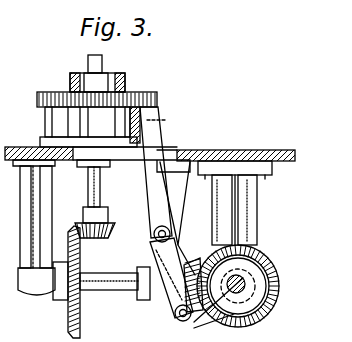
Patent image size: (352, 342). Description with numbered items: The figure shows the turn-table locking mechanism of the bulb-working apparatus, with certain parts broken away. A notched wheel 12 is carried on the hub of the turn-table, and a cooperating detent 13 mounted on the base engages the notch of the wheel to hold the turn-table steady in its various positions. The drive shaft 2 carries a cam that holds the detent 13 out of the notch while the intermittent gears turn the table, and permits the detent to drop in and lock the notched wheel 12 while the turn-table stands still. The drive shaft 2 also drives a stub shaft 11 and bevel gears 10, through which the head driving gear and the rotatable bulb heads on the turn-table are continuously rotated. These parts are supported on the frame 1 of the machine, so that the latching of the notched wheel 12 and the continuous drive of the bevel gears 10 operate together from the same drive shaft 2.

The frame 1 is at (287, 159).
The drive shaft 2 is at (242, 282).
The bevel gears 10 is at (80, 243).
The stub shaft 11 is at (110, 293).
The notched wheel 12 is at (46, 116).
The detent 13 is at (158, 134).